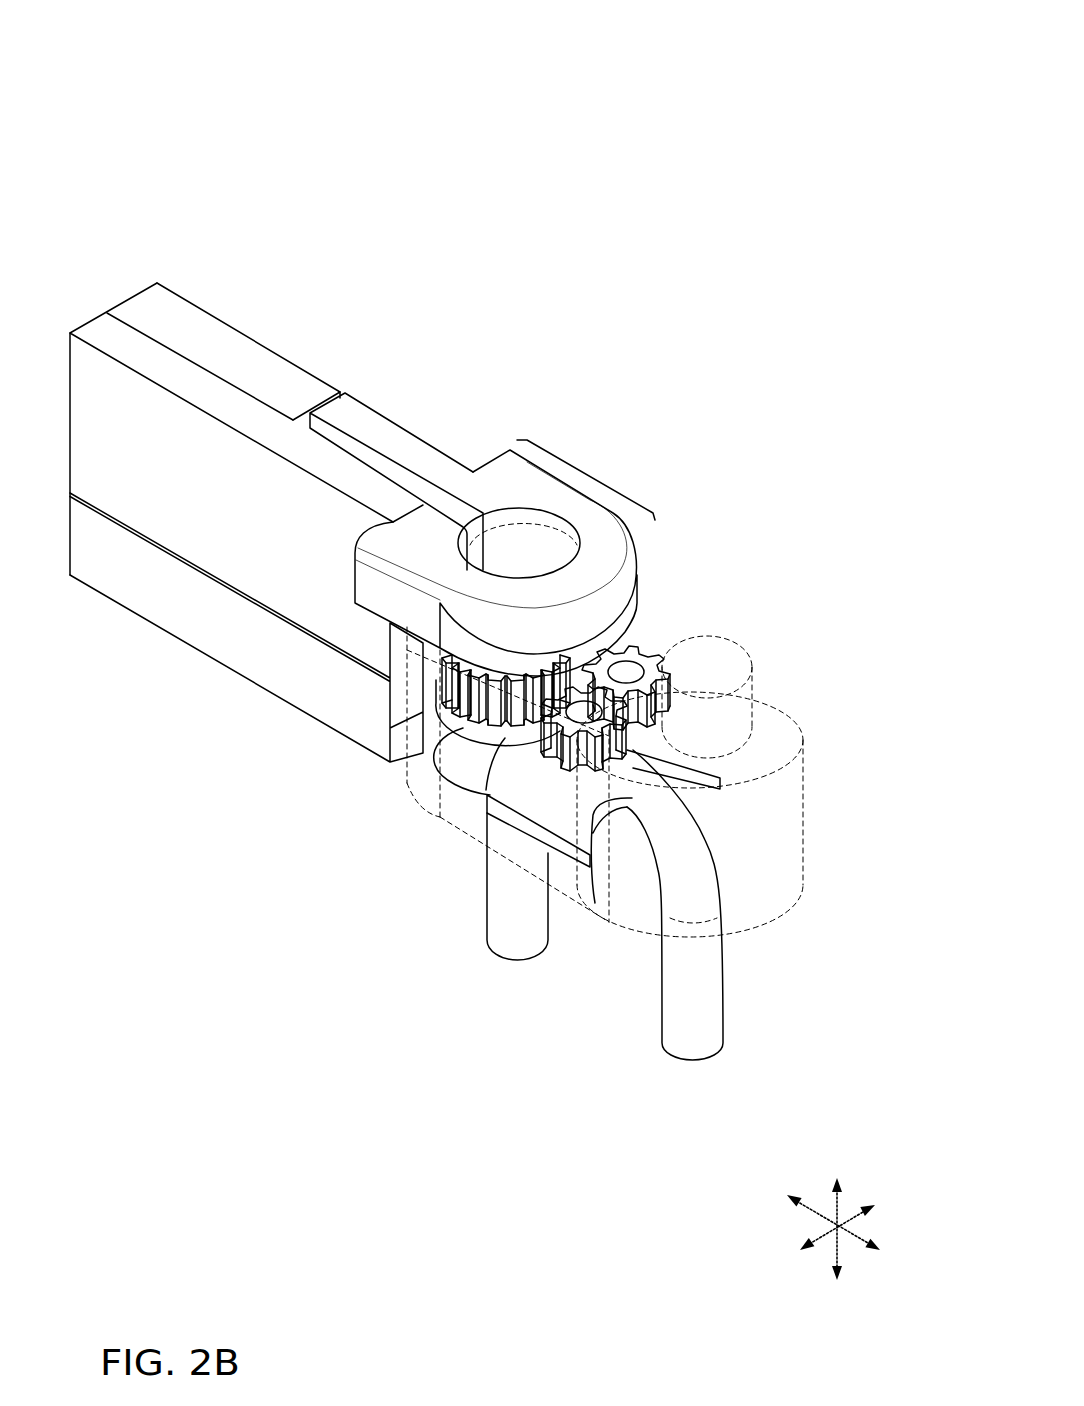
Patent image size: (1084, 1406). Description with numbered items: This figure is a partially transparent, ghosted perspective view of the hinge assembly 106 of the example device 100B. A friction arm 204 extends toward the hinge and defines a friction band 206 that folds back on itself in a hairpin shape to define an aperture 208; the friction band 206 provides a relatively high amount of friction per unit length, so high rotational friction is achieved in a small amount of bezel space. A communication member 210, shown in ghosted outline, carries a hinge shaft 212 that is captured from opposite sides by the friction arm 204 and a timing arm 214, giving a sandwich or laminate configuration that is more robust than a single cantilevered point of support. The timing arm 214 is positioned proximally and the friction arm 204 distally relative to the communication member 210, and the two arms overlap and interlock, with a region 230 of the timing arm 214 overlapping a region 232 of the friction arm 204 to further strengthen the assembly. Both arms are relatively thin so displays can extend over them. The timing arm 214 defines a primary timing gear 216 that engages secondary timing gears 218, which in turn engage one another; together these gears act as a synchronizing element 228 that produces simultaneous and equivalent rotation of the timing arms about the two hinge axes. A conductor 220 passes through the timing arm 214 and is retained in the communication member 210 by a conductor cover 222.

The device 100B is at (918, 41).
The hinge assembly 106 is at (200, 58).
The friction arm 204 is at (222, 368).
The friction band 206 is at (593, 478).
The aperture 208 is at (583, 537).
The communication member 210 is at (812, 873).
The hinge shaft 212 is at (745, 666).
The timing arm 214 is at (240, 682).
The primary timing gear 216 is at (467, 730).
The secondary timing gear 218 is at (670, 710).
The conductor 220 is at (707, 1057).
The conductor cover 222 is at (595, 903).
The synchronizing element 228 is at (524, 752).
The region 230 is at (142, 330).
The region 232 is at (125, 318).